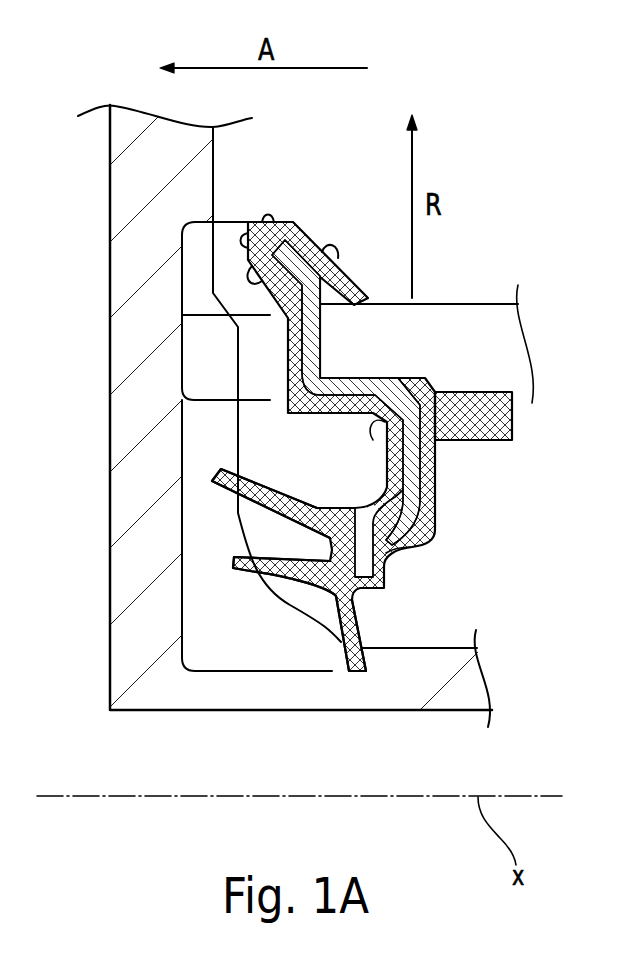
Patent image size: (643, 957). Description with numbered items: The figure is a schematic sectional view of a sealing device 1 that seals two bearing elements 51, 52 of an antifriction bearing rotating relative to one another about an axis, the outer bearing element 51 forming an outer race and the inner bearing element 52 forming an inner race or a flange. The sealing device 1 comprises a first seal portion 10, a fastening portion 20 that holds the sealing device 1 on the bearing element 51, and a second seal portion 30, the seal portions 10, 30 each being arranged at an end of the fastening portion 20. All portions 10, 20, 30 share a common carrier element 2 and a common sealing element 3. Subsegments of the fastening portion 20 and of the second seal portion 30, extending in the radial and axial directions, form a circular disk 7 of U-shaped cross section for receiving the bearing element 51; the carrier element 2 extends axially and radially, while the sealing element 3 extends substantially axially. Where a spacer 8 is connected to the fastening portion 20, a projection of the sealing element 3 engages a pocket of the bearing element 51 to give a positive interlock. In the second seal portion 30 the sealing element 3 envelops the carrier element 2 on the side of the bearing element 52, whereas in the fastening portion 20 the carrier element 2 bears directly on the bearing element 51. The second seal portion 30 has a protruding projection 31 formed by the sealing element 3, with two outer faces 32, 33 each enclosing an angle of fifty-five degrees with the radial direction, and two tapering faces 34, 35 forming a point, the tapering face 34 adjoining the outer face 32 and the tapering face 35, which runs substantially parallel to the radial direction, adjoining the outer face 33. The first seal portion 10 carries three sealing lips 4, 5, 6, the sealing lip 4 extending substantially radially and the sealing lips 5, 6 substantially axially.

The sealing device 1 is at (502, 92).
The carrier element 2 is at (413, 490).
The sealing element 3 is at (375, 441).
The sealing lip 4 is at (338, 642).
The sealing lip 5 is at (232, 563).
The sealing lip 6 is at (215, 475).
The circular disk 7 is at (359, 357).
The spacer 8 is at (492, 412).
The first seal portion 10 is at (182, 551).
The fastening portion 20 is at (183, 357).
The second seal portion 30 is at (182, 266).
The projection 31 is at (297, 210).
The outer face 32 is at (336, 248).
The outer face 33 is at (255, 279).
The tapering face 34 is at (265, 217).
The tapering face 35 is at (241, 241).
The outer bearing element 51 is at (503, 368).
The inner bearing element 52 is at (166, 687).